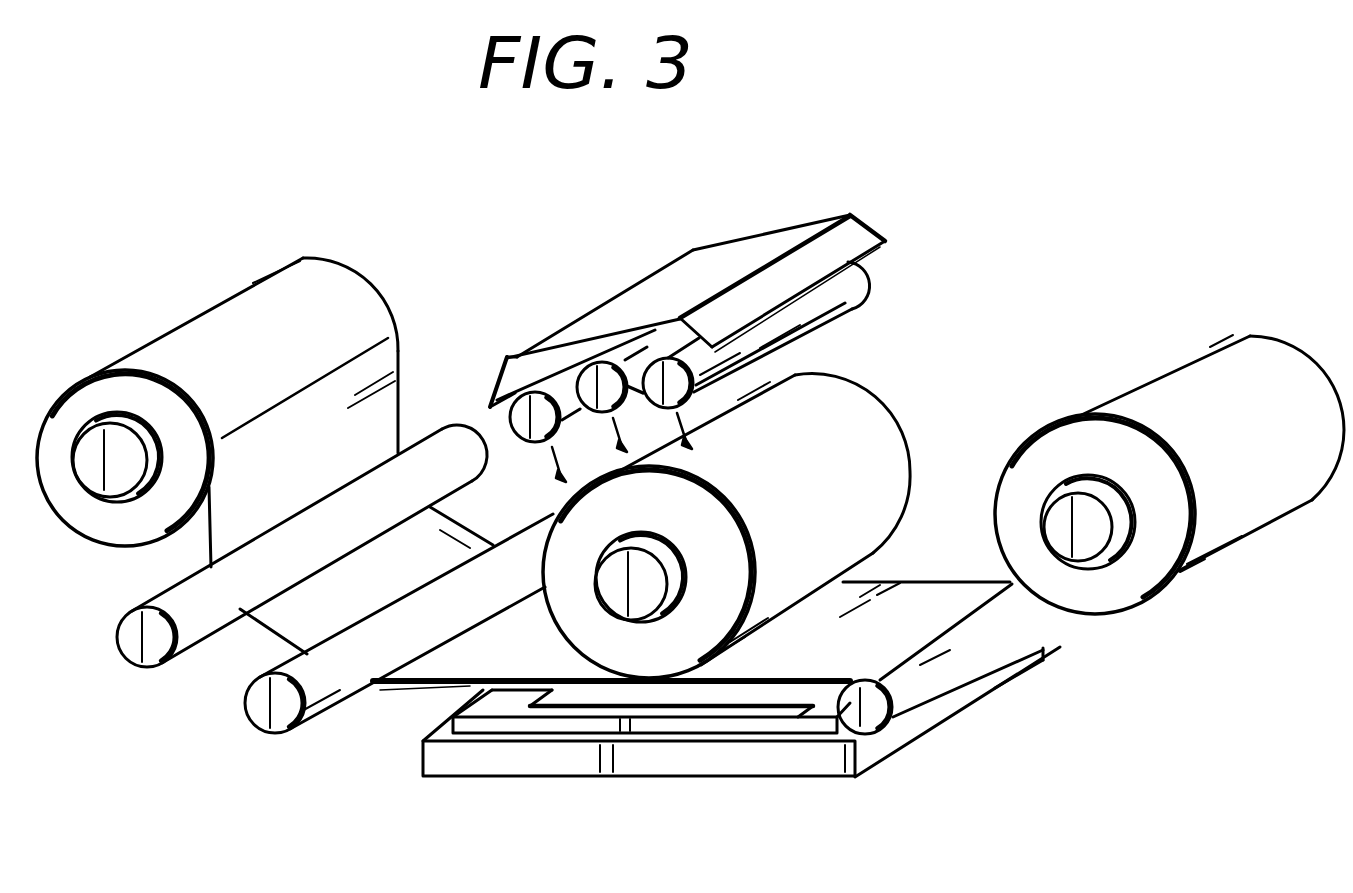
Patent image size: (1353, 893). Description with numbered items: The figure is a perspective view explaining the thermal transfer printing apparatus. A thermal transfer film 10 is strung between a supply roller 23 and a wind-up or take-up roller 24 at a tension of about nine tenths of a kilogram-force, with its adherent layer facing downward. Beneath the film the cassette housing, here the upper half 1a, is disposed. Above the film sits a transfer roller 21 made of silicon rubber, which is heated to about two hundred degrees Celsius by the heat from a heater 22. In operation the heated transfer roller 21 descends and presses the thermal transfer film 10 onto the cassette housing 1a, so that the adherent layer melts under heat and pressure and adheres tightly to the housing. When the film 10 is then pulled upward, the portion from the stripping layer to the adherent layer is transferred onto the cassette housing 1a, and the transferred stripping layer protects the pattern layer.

The supply roller 23 is at (208, 328).
The heater 22 is at (828, 307).
The transfer roller 21 is at (883, 447).
The take-up roller 24 is at (1196, 394).
The thermal transfer film 10 is at (897, 627).
The upper half of cassette housing 1a is at (715, 723).